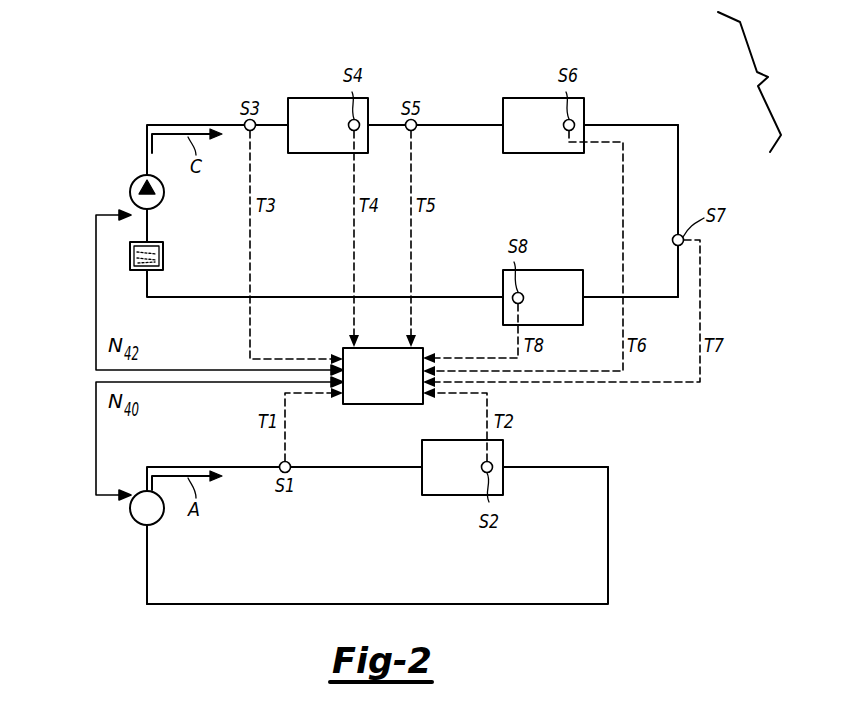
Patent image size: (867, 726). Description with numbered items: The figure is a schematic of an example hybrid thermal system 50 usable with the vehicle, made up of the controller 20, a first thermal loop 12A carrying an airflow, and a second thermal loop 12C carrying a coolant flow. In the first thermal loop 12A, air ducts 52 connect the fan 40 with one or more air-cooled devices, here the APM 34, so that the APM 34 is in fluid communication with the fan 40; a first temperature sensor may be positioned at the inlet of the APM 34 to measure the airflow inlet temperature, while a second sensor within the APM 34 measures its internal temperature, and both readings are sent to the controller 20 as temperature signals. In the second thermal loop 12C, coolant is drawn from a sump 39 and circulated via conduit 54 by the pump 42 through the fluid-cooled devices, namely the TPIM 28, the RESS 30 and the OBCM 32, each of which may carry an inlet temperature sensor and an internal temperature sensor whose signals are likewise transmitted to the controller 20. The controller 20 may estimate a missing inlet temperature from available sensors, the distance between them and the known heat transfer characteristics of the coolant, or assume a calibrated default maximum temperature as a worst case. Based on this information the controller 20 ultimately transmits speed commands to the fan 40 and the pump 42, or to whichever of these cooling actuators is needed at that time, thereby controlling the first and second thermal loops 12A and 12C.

The second thermal loop 12C is at (195, 104).
The first thermal loop 12A is at (655, 483).
The controller 20 is at (384, 397).
The TPIM 28 is at (338, 147).
The RESS 30 is at (554, 147).
The OBCM 32 is at (559, 319).
The APM 34 is at (473, 489).
The sump 39 is at (172, 267).
The fan 40 is at (128, 511).
The pump 42 is at (128, 190).
The hybrid thermal system 50 is at (755, 82).
The air ducts 52 is at (609, 538).
The conduit 54 is at (679, 165).